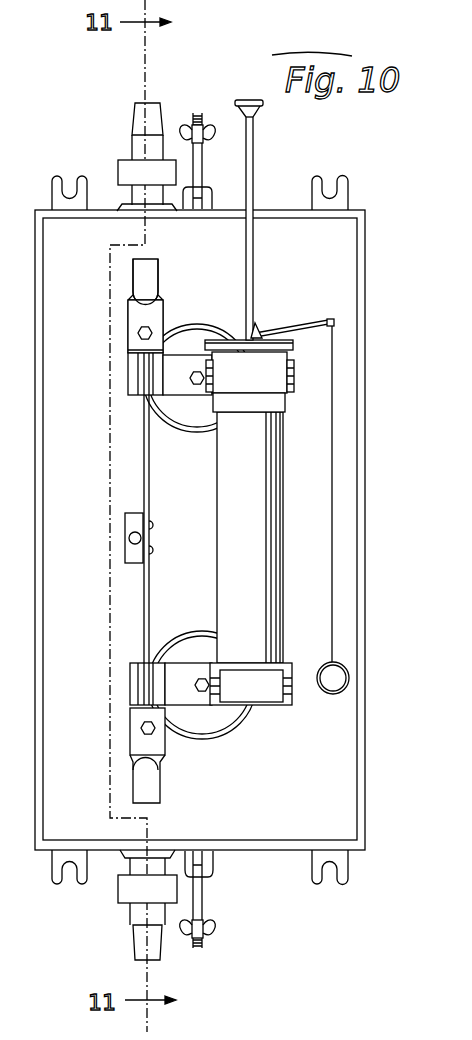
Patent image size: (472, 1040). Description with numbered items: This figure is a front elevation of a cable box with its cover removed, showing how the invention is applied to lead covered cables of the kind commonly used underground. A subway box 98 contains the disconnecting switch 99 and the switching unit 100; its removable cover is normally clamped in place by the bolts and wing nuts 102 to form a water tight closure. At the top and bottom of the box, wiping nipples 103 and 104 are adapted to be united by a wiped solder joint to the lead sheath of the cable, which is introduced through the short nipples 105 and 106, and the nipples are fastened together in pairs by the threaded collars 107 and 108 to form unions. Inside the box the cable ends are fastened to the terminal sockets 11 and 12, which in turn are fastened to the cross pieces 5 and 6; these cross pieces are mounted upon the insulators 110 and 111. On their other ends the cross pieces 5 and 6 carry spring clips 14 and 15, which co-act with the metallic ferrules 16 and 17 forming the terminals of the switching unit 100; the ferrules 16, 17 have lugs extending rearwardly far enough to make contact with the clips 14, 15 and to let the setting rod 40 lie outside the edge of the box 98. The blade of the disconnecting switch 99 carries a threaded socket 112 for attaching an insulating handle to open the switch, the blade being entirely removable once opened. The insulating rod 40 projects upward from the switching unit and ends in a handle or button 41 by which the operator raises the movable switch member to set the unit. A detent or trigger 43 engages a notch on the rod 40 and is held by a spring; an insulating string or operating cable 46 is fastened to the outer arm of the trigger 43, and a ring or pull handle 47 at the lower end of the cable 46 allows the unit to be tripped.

The cross bar 5 is at (178, 388).
The cross bar 6 is at (183, 673).
The terminal socket 11 is at (136, 268).
The terminal socket 12 is at (158, 784).
The spring clip 14 is at (294, 378).
The spring clip 15 is at (292, 703).
The metallic ferrule 16 is at (274, 403).
The metallic ferrule 17 is at (248, 698).
The rod 40 is at (249, 248).
The handle or button 41 is at (258, 110).
The detent or trigger 43 is at (313, 320).
The string or operating cable 46 is at (332, 478).
The ring or pull handle 47 is at (332, 662).
The box 98 is at (40, 681).
The disconnecting switch 99 is at (148, 592).
The switching unit 100 is at (228, 477).
The bolts and wing nuts 102 is at (221, 96).
The wiping nipple 103 is at (137, 113).
The wiping nipple 104 is at (135, 936).
The short nipple 105 is at (137, 192).
The short nipple 106 is at (134, 862).
The threaded collar 107 is at (123, 167).
The threaded collar 108 is at (128, 890).
The insulator 110 is at (224, 310).
The insulator 111 is at (201, 732).
The threaded socket 112 is at (128, 548).